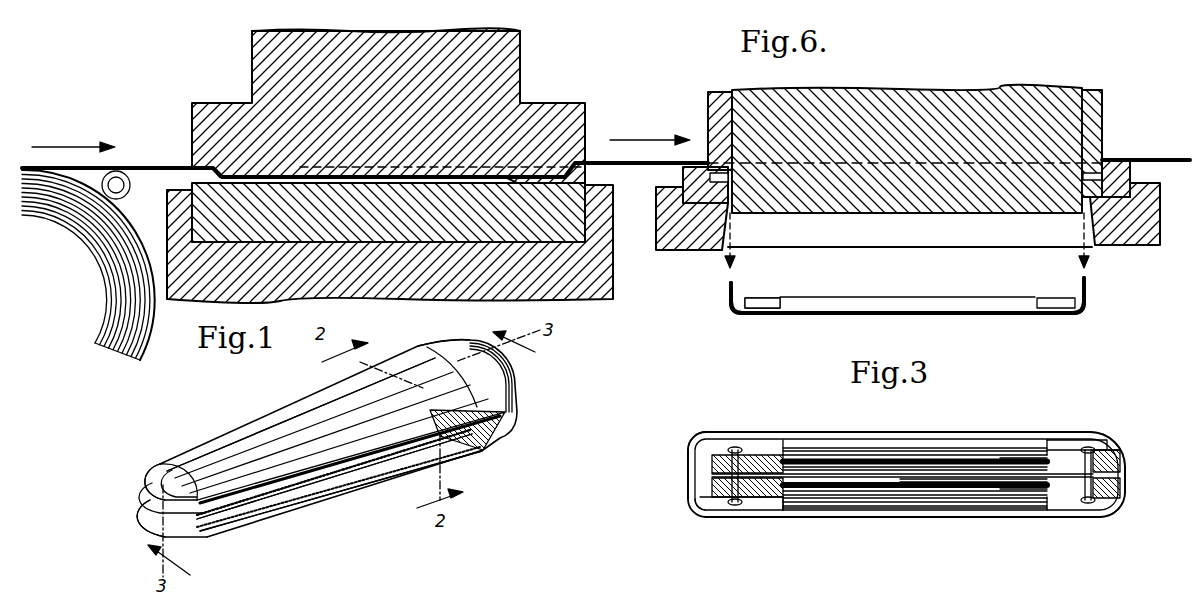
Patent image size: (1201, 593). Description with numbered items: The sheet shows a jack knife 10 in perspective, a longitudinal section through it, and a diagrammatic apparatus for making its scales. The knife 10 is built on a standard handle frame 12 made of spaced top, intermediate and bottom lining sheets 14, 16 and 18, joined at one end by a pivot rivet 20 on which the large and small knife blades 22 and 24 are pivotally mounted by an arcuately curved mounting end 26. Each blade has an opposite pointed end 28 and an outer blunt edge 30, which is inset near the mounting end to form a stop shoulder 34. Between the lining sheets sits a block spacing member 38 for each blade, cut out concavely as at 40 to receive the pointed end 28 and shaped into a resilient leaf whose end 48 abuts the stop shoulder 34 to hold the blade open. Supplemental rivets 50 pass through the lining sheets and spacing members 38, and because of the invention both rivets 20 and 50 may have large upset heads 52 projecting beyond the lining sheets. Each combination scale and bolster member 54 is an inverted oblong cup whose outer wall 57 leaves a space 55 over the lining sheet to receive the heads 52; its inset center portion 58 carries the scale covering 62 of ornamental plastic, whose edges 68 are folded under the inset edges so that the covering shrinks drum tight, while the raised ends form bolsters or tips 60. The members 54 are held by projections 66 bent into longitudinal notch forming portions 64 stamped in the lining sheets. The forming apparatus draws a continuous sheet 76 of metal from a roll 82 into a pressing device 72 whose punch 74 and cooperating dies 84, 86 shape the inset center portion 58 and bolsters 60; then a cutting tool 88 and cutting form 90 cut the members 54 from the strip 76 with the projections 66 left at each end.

In FIG. 1, the jack knife 10 is at (297, 395).
In FIG. 3, the jack knife 10 is at (843, 430).
In FIG. 3, the knife handle frame 12 is at (1120, 450).
In FIG. 3, the top lining sheet 14 is at (810, 447).
In FIG. 3, the intermediate lining sheet 16 is at (808, 478).
In FIG. 3, the bottom lining sheet 18 is at (825, 500).
In FIG. 3, the pivot rivet 20 is at (735, 505).
In FIG. 1, the large knife blade 22 is at (352, 488).
In FIG. 3, the large knife blade 22 is at (985, 506).
In FIG. 1, the small knife blade 24 is at (282, 477).
In FIG. 3, the small knife blade 24 is at (903, 458).
In FIG. 3, the curved mounting end 26 is at (700, 505).
In FIG. 3, the pointed end 28 is at (1012, 470).
In FIG. 1, the outer blunt edge 30 is at (318, 492).
In FIG. 1, the stop shoulder 34 is at (233, 507).
In FIG. 3, the block spacing member 38 is at (1121, 482).
In FIG. 3, the concave cut out portion 40 is at (1050, 440).
In FIG. 3, the leaf terminating end 48 is at (712, 465).
In FIG. 3, the supplemental rivet 50 is at (1104, 450).
In FIG. 3, the rivet head 52 is at (740, 448).
In FIG. 6, the combination scale and bolster forming member 54 is at (963, 314).
In FIG. 1, the combination scale and bolster forming member 54 is at (517, 375).
In FIG. 3, the combination scale and bolster forming member 54 is at (737, 432).
In FIG. 3, the space 55 is at (1062, 444).
In FIG. 3, the outer wall 57 is at (975, 468).
In FIG. 6, the inset center portion 58 is at (800, 311).
In FIG. 3, the inset center portion 58 is at (942, 510).
In FIG. 6, the bolster or tip 60 is at (764, 312).
In FIG. 1, the bolster or tip 60 is at (181, 453).
In FIG. 3, the bolster or tip 60 is at (712, 432).
In FIG. 1, the scale covering 62 is at (243, 428).
In FIG. 3, the scale covering 62 is at (935, 432).
In FIG. 3, the notch forming portion 64 is at (706, 436).
In FIG. 6, the projection 66 is at (731, 287).
In FIG. 3, the projection 66 is at (694, 455).
In FIG. 3, the folded edge 68 is at (867, 452).
In FIG. 6, the pressing device 72 is at (535, 90).
In FIG. 6, the punch 74 is at (1030, 84).
In FIG. 6, the sheet of sheet metal 76 is at (107, 167).
In FIG. 6, the roll 82 is at (108, 225).
In FIG. 6, the die 84 is at (550, 220).
In FIG. 6, the die 86 is at (495, 63).
In FIG. 6, the cutting tool 88 is at (1060, 130).
In FIG. 6, the cutting form 90 is at (712, 205).